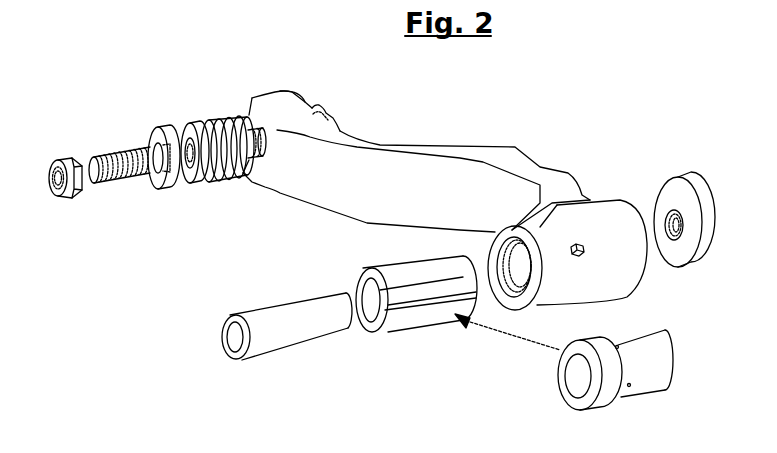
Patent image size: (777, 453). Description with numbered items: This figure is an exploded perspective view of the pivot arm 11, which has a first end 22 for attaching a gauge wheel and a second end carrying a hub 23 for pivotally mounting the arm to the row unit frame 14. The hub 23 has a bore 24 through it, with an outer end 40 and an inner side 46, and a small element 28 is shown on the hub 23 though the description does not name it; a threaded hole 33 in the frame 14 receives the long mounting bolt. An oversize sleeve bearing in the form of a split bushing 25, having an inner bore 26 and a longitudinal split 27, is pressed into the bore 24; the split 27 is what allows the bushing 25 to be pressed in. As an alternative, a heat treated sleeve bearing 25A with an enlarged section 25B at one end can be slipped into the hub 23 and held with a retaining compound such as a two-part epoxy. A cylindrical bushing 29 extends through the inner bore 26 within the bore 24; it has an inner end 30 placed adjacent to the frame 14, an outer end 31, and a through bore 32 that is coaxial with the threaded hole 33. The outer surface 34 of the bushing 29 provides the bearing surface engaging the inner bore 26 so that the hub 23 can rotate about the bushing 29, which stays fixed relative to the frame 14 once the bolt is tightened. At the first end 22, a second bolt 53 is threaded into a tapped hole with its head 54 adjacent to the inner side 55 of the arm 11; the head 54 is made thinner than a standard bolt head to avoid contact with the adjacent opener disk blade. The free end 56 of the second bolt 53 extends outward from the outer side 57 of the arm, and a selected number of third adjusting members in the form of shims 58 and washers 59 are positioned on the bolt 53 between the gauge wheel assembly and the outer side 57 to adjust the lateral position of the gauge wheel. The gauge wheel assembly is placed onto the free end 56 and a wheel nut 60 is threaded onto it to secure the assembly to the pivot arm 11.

The pivot arm 11 is at (397, 163).
The frame 14 is at (698, 188).
The first end 22 is at (272, 100).
The hub 23 is at (612, 280).
The bore 24 is at (510, 257).
The split bushing 25 is at (400, 323).
The sleeve bearing 25A is at (642, 380).
The enlarged section 25B is at (605, 405).
The inner bore 26 is at (365, 293).
The longitudinal split 27 is at (417, 302).
The set screw 28 is at (578, 247).
The bushing 29 is at (268, 313).
The inner end 30 is at (345, 332).
The outer end 31 is at (232, 360).
The through bore 32 is at (228, 338).
The threaded hole 33 is at (664, 196).
The outer surface 34 is at (283, 343).
The outer end 40 is at (528, 240).
The inner side 46 is at (647, 265).
The second bolt 53 is at (127, 150).
The head 54 is at (332, 118).
The inner side 55 is at (303, 98).
The free end 56 is at (105, 182).
The outer side 57 is at (248, 113).
The shims 58 is at (160, 132).
The washers 59 is at (195, 120).
The wheel nut 60 is at (63, 160).